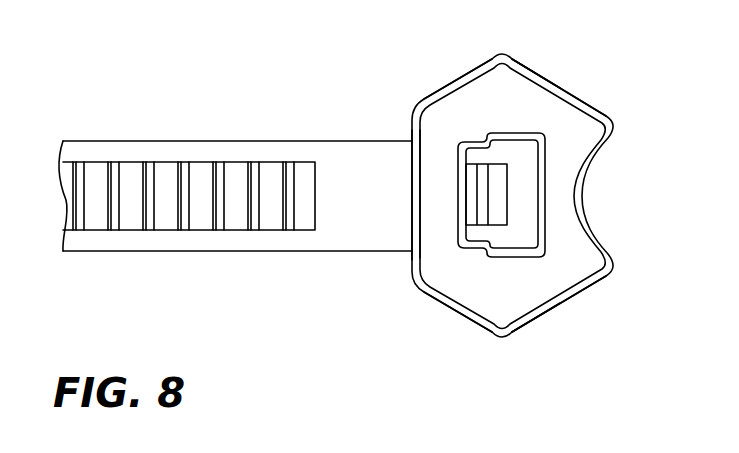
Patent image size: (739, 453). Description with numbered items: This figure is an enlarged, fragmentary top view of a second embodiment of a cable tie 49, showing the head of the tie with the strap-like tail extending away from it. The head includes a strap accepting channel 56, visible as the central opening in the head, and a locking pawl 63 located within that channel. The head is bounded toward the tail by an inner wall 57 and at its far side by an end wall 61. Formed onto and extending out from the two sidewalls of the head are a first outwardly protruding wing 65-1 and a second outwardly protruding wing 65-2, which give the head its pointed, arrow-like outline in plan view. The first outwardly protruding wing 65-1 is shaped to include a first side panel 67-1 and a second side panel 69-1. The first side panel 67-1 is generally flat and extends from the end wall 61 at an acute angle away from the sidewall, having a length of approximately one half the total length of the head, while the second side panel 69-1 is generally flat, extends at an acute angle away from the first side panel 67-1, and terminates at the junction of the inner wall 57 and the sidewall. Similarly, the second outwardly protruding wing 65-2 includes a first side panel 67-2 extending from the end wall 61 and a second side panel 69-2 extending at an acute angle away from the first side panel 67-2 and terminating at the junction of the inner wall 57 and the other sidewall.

The cable tie 49 is at (187, 275).
The strap accepting channel 56 is at (527, 152).
The inner wall 57 is at (410, 188).
The end wall 61 is at (603, 237).
The locking pawl 63 is at (498, 184).
The first outwardly protruding wing 65-1 is at (545, 52).
The second outwardly protruding wing 65-2 is at (545, 335).
The first side panel 67-1 is at (585, 98).
The first side panel 67-2 is at (592, 290).
The second side panel 69-1 is at (444, 86).
The second side panel 69-2 is at (445, 301).